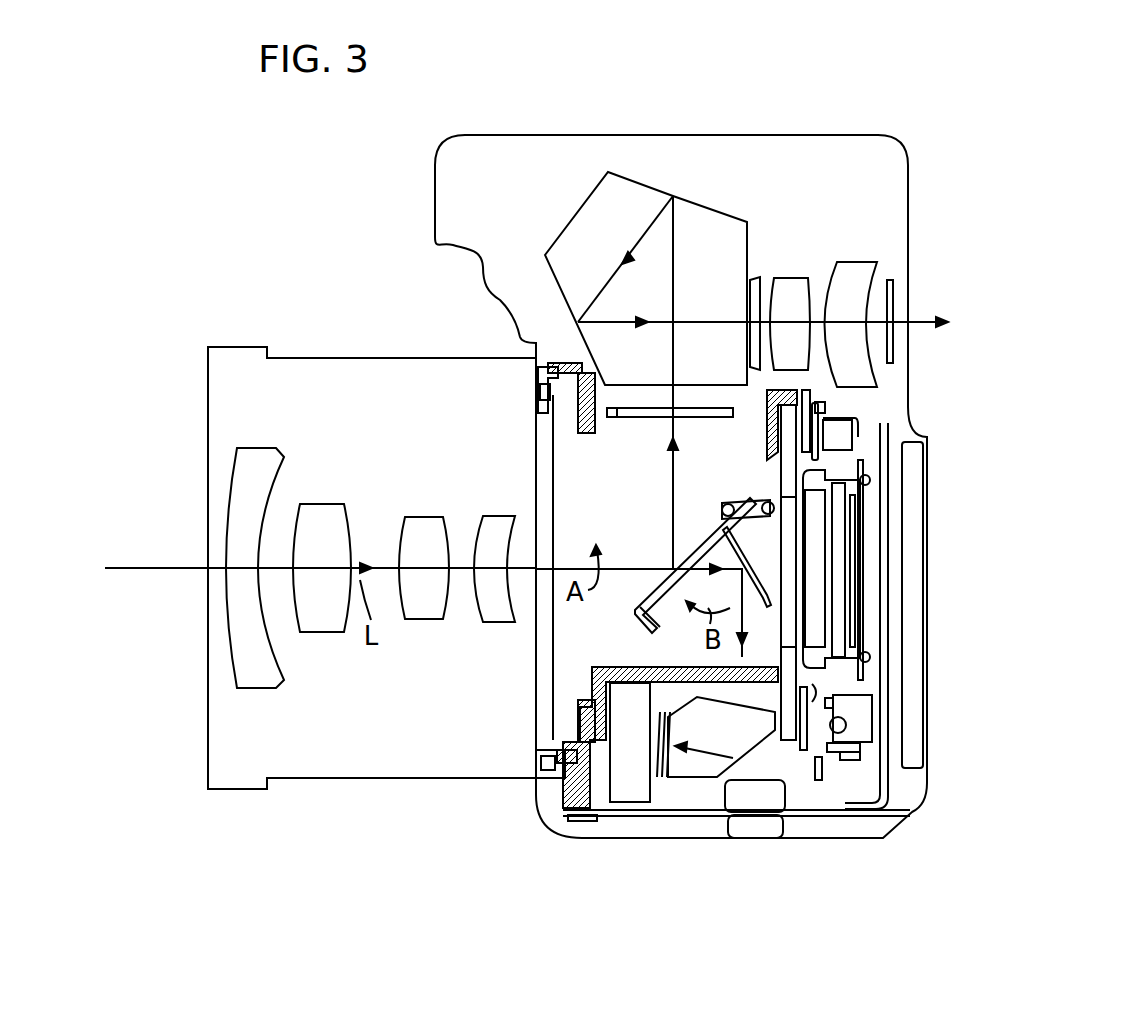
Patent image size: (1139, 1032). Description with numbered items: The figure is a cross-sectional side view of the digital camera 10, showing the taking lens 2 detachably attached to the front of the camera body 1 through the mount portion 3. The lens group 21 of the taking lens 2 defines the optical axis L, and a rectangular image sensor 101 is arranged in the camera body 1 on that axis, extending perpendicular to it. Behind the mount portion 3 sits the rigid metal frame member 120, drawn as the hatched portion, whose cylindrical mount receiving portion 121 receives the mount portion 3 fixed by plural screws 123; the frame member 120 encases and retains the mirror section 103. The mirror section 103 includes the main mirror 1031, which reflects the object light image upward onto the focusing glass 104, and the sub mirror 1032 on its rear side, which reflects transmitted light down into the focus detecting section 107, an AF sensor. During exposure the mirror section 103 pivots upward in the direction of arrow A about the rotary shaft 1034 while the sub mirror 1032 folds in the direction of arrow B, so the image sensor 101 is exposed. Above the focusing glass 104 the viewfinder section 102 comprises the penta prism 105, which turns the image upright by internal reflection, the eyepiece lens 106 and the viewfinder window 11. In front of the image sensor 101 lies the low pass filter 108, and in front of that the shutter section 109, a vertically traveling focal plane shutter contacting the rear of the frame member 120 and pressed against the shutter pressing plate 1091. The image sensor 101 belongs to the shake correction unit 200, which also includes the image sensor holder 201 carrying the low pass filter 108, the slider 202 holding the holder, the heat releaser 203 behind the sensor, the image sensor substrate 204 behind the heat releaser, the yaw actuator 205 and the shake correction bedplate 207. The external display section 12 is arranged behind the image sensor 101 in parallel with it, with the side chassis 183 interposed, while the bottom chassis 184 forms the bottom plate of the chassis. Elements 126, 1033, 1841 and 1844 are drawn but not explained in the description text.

The camera body 1 is at (935, 432).
The digital camera 10 is at (1013, 170).
The taking lens 2 is at (360, 757).
The lens group 21 is at (230, 440).
The mount portion 3 is at (540, 397).
The viewfinder window 11 is at (893, 290).
The external display section 12 is at (913, 560).
The image sensor 101 is at (842, 543).
The viewfinder section 102 is at (740, 195).
The mirror section 103 is at (624, 615).
The focusing glass 104 is at (631, 418).
The penta prism 105 is at (608, 227).
The eyepiece lens 106 is at (807, 262).
The focus detecting section 107 is at (695, 770).
The low pass filter 108 is at (815, 518).
The shutter section 109 is at (802, 740).
The frame member 120 is at (583, 747).
The mount receiving portion 121 is at (585, 372).
The screws 123 is at (548, 367).
The mirror box side wall 126 is at (578, 795).
The side chassis 183 is at (884, 643).
The bottom chassis 184 is at (785, 813).
The main mirror 1031 is at (668, 600).
The sub mirror 1032 is at (790, 735).
The sub mirror 1033 is at (768, 502).
The rotary shaft 1034 is at (722, 510).
The shutter pressing plate 1091 is at (818, 408).
The bottom plate front portion 1841 is at (575, 820).
The bottom plate rear portion 1844 is at (867, 825).
The shake correction unit 200 is at (866, 685).
The image sensor holder 201 is at (868, 478).
The slider 202 is at (840, 438).
The heat releaser 203 is at (852, 580).
The image sensor substrate 204 is at (860, 607).
The yaw actuator 205 is at (846, 724).
The shake correction bedplate 207 is at (828, 420).